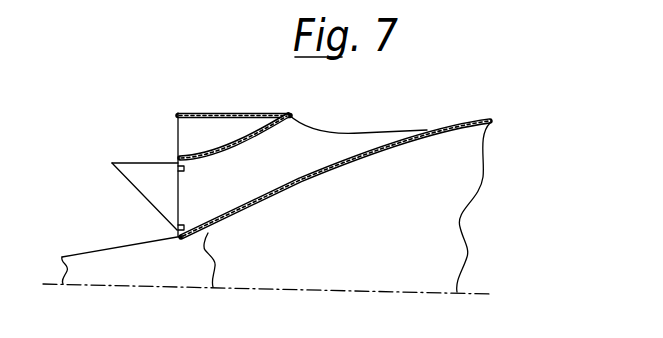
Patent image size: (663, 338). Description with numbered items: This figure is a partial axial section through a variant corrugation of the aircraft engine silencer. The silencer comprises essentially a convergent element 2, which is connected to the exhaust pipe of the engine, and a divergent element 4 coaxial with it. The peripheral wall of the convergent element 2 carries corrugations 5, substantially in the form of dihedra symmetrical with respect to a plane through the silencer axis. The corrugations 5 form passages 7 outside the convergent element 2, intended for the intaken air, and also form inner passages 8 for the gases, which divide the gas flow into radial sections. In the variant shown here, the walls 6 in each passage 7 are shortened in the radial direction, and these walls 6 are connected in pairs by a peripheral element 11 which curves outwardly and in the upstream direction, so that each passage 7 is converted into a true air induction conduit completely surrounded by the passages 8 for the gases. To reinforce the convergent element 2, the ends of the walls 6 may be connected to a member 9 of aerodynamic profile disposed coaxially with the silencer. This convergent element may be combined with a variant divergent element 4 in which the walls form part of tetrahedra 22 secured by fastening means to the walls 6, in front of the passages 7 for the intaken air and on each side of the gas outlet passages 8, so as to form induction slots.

The convergent element 2 is at (200, 112).
The divergent element 4 is at (151, 186).
The corrugations 5 is at (348, 158).
The walls 6 is at (182, 199).
The passages 7 is at (224, 180).
The inner passages 8 is at (190, 128).
The member of aerodynamic profile 9 is at (98, 265).
The peripheral element 11 is at (240, 140).
The tetrahedra 22 is at (143, 175).